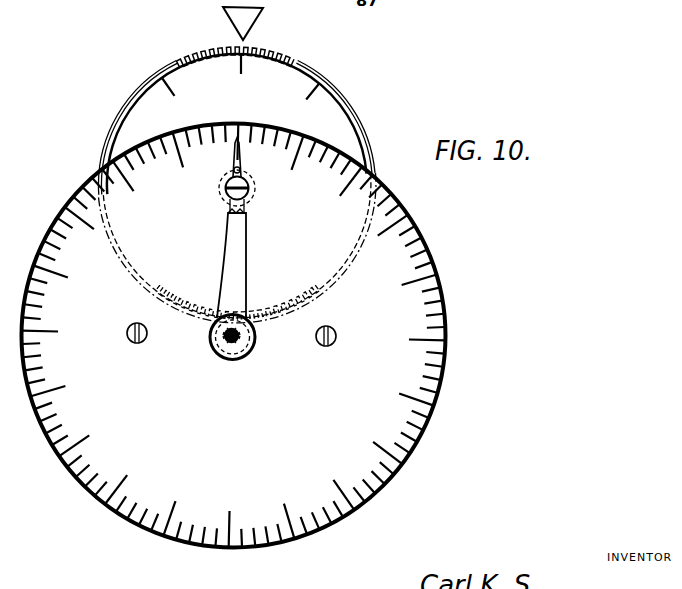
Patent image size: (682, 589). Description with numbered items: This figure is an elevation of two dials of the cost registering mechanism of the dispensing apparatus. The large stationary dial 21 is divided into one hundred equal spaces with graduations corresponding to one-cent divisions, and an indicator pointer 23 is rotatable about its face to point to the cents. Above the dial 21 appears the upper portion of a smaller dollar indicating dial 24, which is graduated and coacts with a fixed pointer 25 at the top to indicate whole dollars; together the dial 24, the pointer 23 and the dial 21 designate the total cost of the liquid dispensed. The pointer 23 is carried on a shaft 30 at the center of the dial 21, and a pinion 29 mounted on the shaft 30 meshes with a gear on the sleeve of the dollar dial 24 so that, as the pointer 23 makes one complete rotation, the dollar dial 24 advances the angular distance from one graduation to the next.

The dial 21 is at (429, 246).
The indicator pointer 23 is at (247, 245).
The dollar indicating dial 24 is at (354, 127).
The fixed pointer 25 is at (262, 18).
The pinion 29 is at (221, 357).
The shaft 30 is at (237, 343).